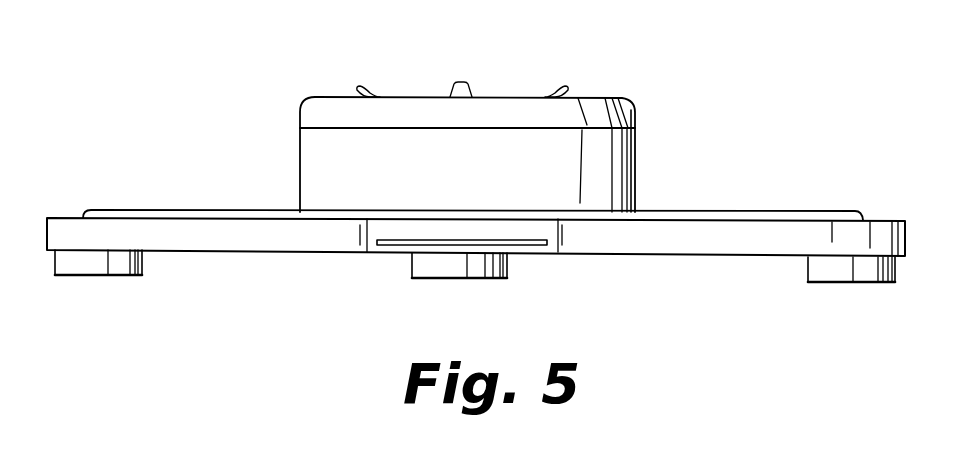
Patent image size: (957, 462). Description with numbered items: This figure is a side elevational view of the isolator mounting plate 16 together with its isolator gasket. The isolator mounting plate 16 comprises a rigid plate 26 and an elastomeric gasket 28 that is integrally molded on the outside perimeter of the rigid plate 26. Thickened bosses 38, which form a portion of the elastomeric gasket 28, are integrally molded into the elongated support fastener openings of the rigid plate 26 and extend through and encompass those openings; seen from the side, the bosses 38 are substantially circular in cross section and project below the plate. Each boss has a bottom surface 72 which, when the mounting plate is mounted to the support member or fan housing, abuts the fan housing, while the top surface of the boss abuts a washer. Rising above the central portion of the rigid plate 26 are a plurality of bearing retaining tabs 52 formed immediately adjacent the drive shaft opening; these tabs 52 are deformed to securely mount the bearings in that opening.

The isolator mounting plate 16 is at (163, 170).
The rigid plate 26 is at (745, 211).
The elastomeric gasket 28 is at (665, 257).
The thickened bosses 38 is at (145, 266).
The bearing retaining tabs 52 is at (447, 84).
The bottom surface of the boss 72 is at (92, 276).